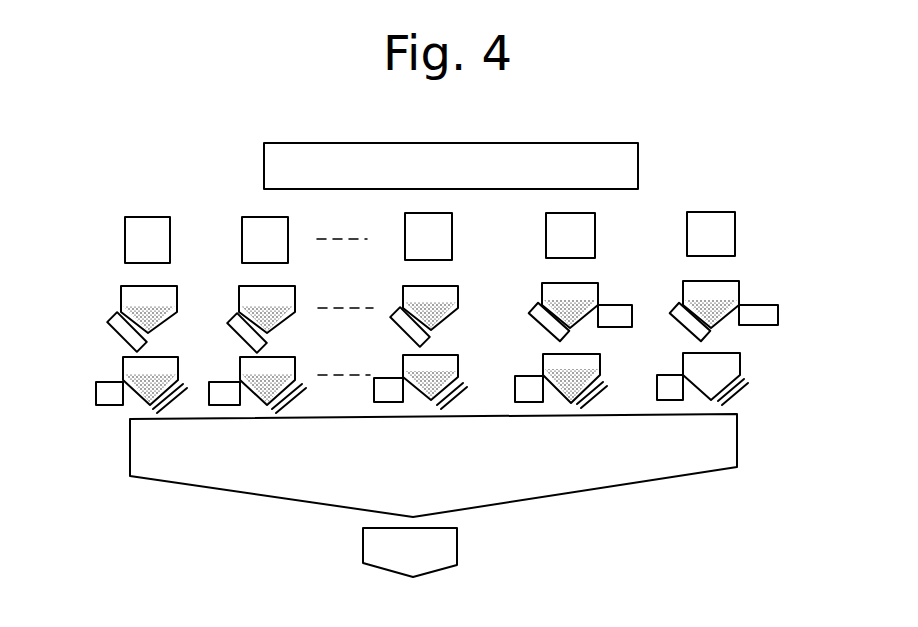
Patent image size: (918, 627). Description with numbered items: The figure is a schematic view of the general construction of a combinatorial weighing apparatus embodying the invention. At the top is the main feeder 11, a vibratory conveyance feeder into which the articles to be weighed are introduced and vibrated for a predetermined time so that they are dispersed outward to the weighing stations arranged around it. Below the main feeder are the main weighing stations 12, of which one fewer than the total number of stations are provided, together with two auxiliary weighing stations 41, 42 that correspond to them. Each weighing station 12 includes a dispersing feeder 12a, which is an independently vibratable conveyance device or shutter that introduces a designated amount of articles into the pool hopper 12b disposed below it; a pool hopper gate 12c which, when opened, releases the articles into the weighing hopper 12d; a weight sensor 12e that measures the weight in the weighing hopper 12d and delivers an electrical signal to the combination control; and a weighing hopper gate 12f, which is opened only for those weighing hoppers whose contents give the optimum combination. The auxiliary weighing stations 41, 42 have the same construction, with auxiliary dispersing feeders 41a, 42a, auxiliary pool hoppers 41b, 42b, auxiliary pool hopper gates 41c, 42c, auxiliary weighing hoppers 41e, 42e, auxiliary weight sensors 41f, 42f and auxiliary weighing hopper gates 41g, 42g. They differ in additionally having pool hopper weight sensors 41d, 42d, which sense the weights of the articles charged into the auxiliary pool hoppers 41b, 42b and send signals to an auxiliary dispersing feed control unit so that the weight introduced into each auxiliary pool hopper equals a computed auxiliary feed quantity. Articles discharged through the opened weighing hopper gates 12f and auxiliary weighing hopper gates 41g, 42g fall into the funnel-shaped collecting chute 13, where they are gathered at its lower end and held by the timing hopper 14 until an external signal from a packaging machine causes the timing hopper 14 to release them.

The main feeder 11 is at (503, 144).
The weighing station 12 is at (147, 156).
The dispersing feeder 12a is at (136, 218).
The pool hopper 12b is at (121, 286).
The pool hopper gate 12c is at (112, 326).
The weighing hopper 12d is at (117, 367).
The weight sensor 12e is at (96, 396).
The weighing hopper gate 12f is at (287, 399).
The collecting chute 13 is at (563, 497).
The timing hopper 14 is at (458, 549).
The auxiliary weighing station 41 is at (541, 214).
The auxiliary dispersing feeder 41a is at (588, 223).
The auxiliary pool hopper 41b is at (597, 284).
The auxiliary pool hopper gate 41c is at (538, 319).
The pool hopper weight sensor 41d is at (621, 310).
The auxiliary weighing hopper 41e is at (593, 360).
The auxiliary weight sensor 41f is at (518, 378).
The auxiliary weighing hopper gate 41g is at (600, 394).
The auxiliary weighing station 42 is at (683, 199).
The auxiliary dispersing feeder 42a is at (734, 215).
The auxiliary pool hopper 42b is at (740, 283).
The auxiliary pool hopper gate 42c is at (677, 319).
The pool hopper weight sensor 42d is at (777, 318).
The auxiliary weighing hopper 42e is at (735, 360).
The auxiliary weight sensor 42f is at (667, 402).
The auxiliary weighing hopper gate 42g is at (742, 392).